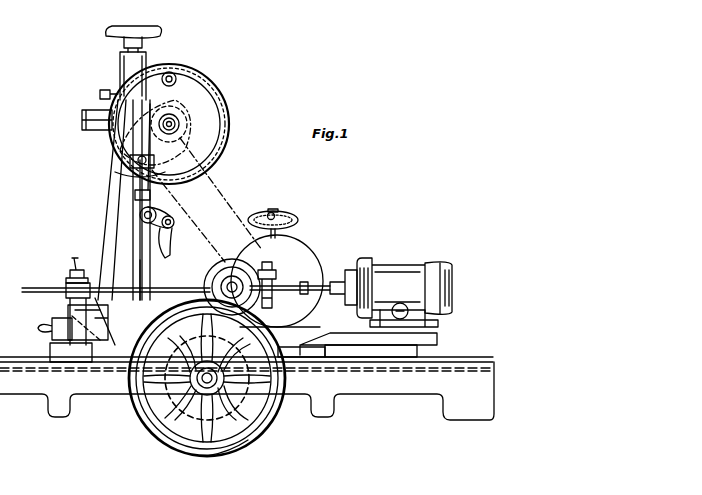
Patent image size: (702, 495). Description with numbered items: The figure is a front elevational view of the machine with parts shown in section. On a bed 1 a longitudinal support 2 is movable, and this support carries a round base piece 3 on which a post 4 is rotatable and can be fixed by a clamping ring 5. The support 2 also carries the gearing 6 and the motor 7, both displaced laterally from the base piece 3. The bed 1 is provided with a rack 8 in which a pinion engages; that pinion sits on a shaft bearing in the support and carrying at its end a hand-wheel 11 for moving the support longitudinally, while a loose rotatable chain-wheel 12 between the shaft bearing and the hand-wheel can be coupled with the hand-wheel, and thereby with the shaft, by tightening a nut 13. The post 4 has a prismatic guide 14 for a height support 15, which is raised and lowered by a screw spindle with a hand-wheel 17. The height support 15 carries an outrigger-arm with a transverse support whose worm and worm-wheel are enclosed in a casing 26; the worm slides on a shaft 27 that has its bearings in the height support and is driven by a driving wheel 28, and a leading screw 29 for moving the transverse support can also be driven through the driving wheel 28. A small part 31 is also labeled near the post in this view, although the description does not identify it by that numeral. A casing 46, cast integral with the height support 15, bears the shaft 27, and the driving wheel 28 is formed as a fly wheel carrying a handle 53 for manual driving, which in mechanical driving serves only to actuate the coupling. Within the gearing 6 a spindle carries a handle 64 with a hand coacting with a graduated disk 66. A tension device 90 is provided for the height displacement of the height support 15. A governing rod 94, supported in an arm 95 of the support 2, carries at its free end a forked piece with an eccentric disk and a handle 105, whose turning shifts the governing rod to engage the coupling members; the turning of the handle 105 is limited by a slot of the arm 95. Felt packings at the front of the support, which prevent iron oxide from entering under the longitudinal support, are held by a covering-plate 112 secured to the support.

The bed 1 is at (28, 384).
The longitudinal support 2 is at (306, 357).
The round base piece 3 is at (125, 340).
The post 4 is at (108, 208).
The clamping ring 5 is at (55, 329).
The gearing 6 is at (310, 258).
The motor 7 is at (402, 265).
The rack 8 is at (472, 366).
The hand-wheel 11 is at (243, 446).
The chain-wheel 12 is at (155, 428).
The nut 13 is at (208, 379).
The prismatic guide 14 is at (138, 270).
The height support 15 is at (150, 196).
The hand-wheel 17 is at (160, 33).
The casing 26 is at (84, 130).
The shaft 27 is at (178, 116).
The driving wheel 28 is at (215, 130).
The leading screw 29 is at (130, 176).
The knob 31 is at (105, 82).
The casing 46 is at (128, 164).
The handle 53 is at (174, 74).
The handle 64 is at (282, 214).
The graduated disk 66 is at (266, 212).
The tension device 90 is at (176, 221).
The governing rod 94 is at (198, 280).
The arm 95 is at (104, 340).
The handle 105 is at (70, 262).
The covering-plate 112 is at (72, 362).